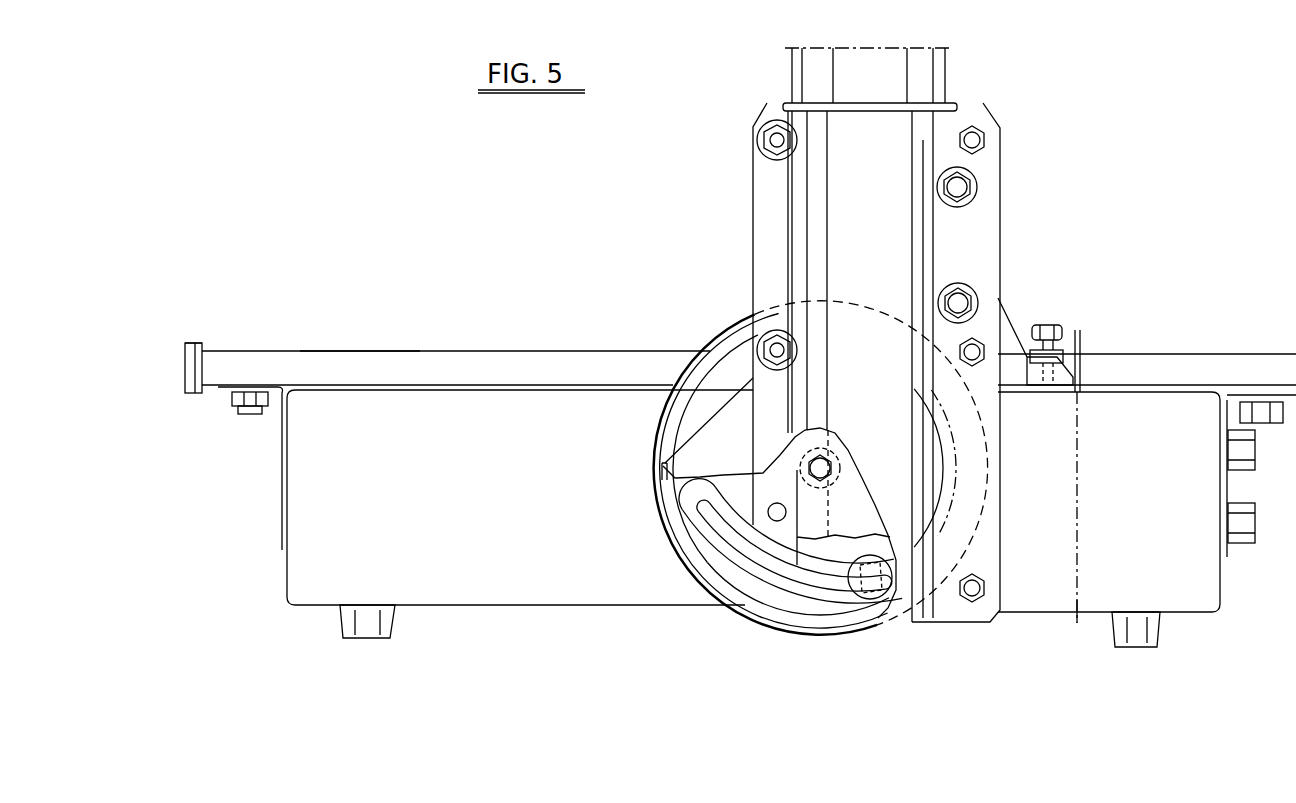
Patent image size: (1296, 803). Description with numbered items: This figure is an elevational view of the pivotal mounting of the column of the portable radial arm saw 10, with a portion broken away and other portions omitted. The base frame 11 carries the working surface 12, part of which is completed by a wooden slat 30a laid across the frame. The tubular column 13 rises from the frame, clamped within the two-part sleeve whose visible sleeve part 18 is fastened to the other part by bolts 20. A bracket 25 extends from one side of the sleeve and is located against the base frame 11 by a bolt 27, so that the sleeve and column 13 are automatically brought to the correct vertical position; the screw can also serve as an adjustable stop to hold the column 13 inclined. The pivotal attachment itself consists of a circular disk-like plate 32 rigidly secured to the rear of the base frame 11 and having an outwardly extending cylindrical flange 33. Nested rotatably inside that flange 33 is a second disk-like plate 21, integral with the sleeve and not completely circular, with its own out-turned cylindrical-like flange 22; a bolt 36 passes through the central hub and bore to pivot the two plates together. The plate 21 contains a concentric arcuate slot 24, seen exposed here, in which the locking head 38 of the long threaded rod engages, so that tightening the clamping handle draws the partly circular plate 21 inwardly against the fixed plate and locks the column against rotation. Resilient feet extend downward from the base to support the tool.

The radial arm saw 10 is at (373, 228).
The base frame 11 is at (283, 570).
The working surface 12 is at (520, 343).
The column 13 is at (922, 72).
The sleeve part 18 is at (805, 193).
The bolts 20 is at (767, 147).
The second disk-like plate 21 is at (740, 418).
The out-turned cylindrical-like flange 22 is at (683, 548).
The arcuate slot 24 is at (742, 560).
The bracket 25 is at (1007, 333).
The bolt 27 is at (1047, 328).
The wooden slat 30a is at (348, 357).
The circular disk-like plate 32 is at (695, 407).
The cylindrical flange 33 is at (658, 428).
The bolt 36 is at (847, 453).
The locking head 38 is at (870, 583).